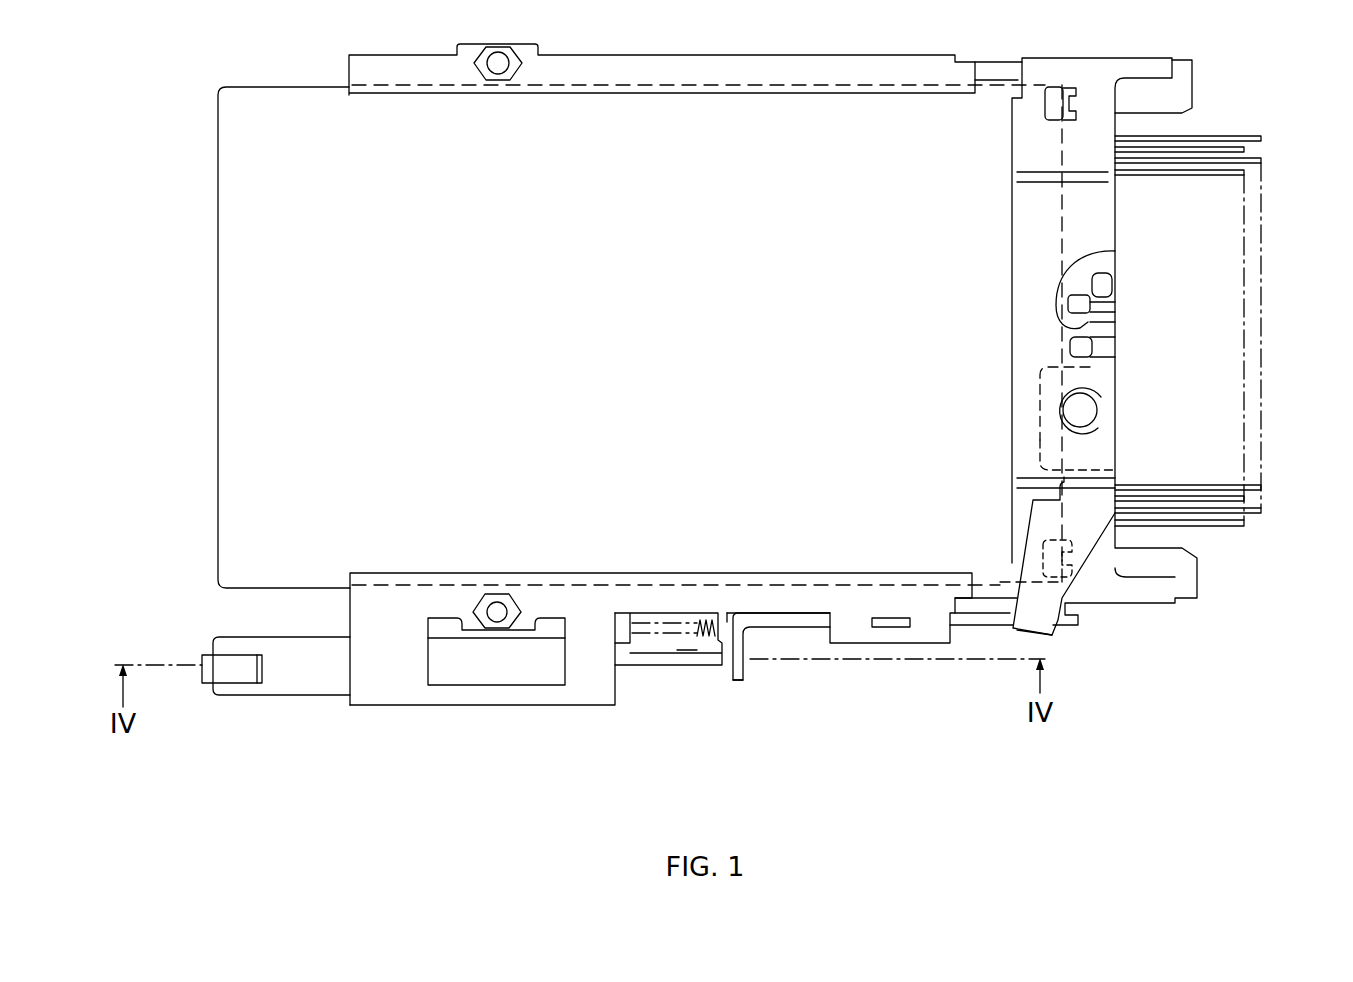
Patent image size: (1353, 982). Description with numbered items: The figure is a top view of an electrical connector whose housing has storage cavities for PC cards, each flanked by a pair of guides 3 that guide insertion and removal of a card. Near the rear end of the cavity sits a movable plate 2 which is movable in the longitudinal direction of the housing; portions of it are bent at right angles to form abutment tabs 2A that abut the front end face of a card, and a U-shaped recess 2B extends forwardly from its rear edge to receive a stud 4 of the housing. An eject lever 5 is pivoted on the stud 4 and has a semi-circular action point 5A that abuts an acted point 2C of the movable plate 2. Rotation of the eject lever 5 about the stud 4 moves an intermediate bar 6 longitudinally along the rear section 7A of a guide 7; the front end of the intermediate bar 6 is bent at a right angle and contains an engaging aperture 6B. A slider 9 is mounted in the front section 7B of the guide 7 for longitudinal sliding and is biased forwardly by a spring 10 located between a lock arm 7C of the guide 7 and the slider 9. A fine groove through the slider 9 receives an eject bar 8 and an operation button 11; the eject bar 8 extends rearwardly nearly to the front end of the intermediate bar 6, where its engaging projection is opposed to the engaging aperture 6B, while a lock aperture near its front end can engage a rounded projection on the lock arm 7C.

The movable plate 2 is at (1028, 118).
The abutment tabs 2A is at (1073, 88).
The U-shaped recess 2B is at (1103, 432).
The acted point 2C is at (1115, 252).
The guides 3 is at (816, 68).
The stud 4 is at (1086, 408).
The eject lever 5 is at (1090, 527).
The action point 5A is at (1115, 322).
The intermediate bar 6 is at (815, 622).
The engaging aperture 6B is at (752, 663).
The guide 7 is at (673, 570).
The rear section 7A is at (860, 608).
The front section 7B is at (583, 677).
The lock arm 7C is at (740, 612).
The eject bar 8 is at (643, 660).
The slider 9 is at (299, 686).
The spring 10 is at (700, 640).
The operation button 11 is at (207, 668).